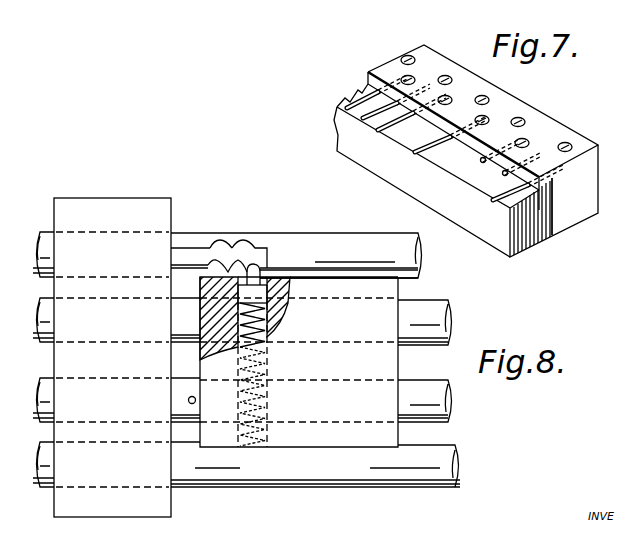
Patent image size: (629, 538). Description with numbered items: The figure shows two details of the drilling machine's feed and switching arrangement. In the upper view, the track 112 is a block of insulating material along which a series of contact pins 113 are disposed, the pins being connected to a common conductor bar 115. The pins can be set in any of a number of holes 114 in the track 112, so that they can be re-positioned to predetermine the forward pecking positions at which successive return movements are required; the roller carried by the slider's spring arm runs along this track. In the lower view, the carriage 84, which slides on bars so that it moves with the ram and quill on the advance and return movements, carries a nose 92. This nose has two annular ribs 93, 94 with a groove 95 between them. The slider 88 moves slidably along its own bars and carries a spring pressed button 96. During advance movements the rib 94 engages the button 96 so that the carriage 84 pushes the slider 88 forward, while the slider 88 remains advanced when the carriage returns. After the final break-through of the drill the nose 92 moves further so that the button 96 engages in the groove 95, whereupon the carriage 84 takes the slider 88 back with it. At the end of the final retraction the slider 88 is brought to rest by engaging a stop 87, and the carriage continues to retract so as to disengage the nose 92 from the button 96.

In FIG. 8, the carriage 84 is at (103, 212).
In FIG. 8, the stop 87 is at (195, 398).
In FIG. 8, the slider 88 is at (330, 282).
In FIG. 8, the nose 92 is at (268, 247).
In FIG. 8, the annular rib 93 is at (220, 241).
In FIG. 8, the annular rib 94 is at (247, 243).
In FIG. 8, the groove 95 is at (240, 241).
In FIG. 8, the spring pressed button 96 is at (268, 268).
In FIG. 7, the track 112 is at (400, 140).
In FIG. 7, the contact pins 113 is at (502, 193).
In FIG. 7, the holes 114 is at (481, 161).
In FIG. 7, the common conductor bar 115 is at (575, 208).